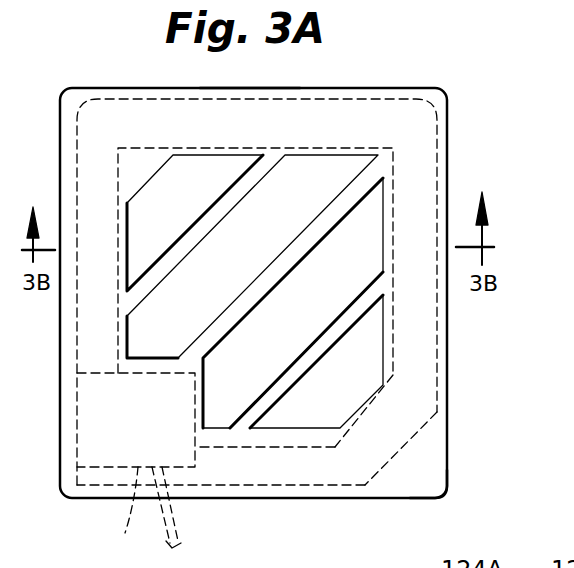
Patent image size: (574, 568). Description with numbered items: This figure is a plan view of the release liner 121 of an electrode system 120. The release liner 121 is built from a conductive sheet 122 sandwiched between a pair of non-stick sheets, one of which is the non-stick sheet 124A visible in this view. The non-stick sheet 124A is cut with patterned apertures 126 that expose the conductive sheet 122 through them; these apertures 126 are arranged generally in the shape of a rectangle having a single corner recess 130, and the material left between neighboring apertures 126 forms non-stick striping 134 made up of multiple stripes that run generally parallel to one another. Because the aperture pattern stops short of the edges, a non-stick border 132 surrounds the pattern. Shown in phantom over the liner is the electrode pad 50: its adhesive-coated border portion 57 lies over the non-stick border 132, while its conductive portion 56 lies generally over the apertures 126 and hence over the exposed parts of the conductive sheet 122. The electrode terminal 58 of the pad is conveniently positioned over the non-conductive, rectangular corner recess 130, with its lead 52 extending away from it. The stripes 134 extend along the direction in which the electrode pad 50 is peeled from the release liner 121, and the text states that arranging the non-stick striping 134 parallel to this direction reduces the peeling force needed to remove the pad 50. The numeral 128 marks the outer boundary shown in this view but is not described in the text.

The electrode system 120 is at (184, 78).
The release liner 121 is at (245, 88).
The conductive sheet 122 is at (283, 239).
The non-stick sheet 124A is at (434, 457).
The patterned apertures 126 is at (193, 153).
The substrate perimeter 128 is at (449, 120).
The corner recess 130 is at (147, 358).
The non-stick border 132 is at (419, 487).
The non-stick striping 134 is at (172, 255).
The electrode pad 50 is at (375, 480).
The lead wire 52 is at (172, 522).
The conductive portion 56 is at (391, 405).
The adhesive-coated border portion 57 is at (366, 468).
The electrode terminal 58 is at (113, 509).